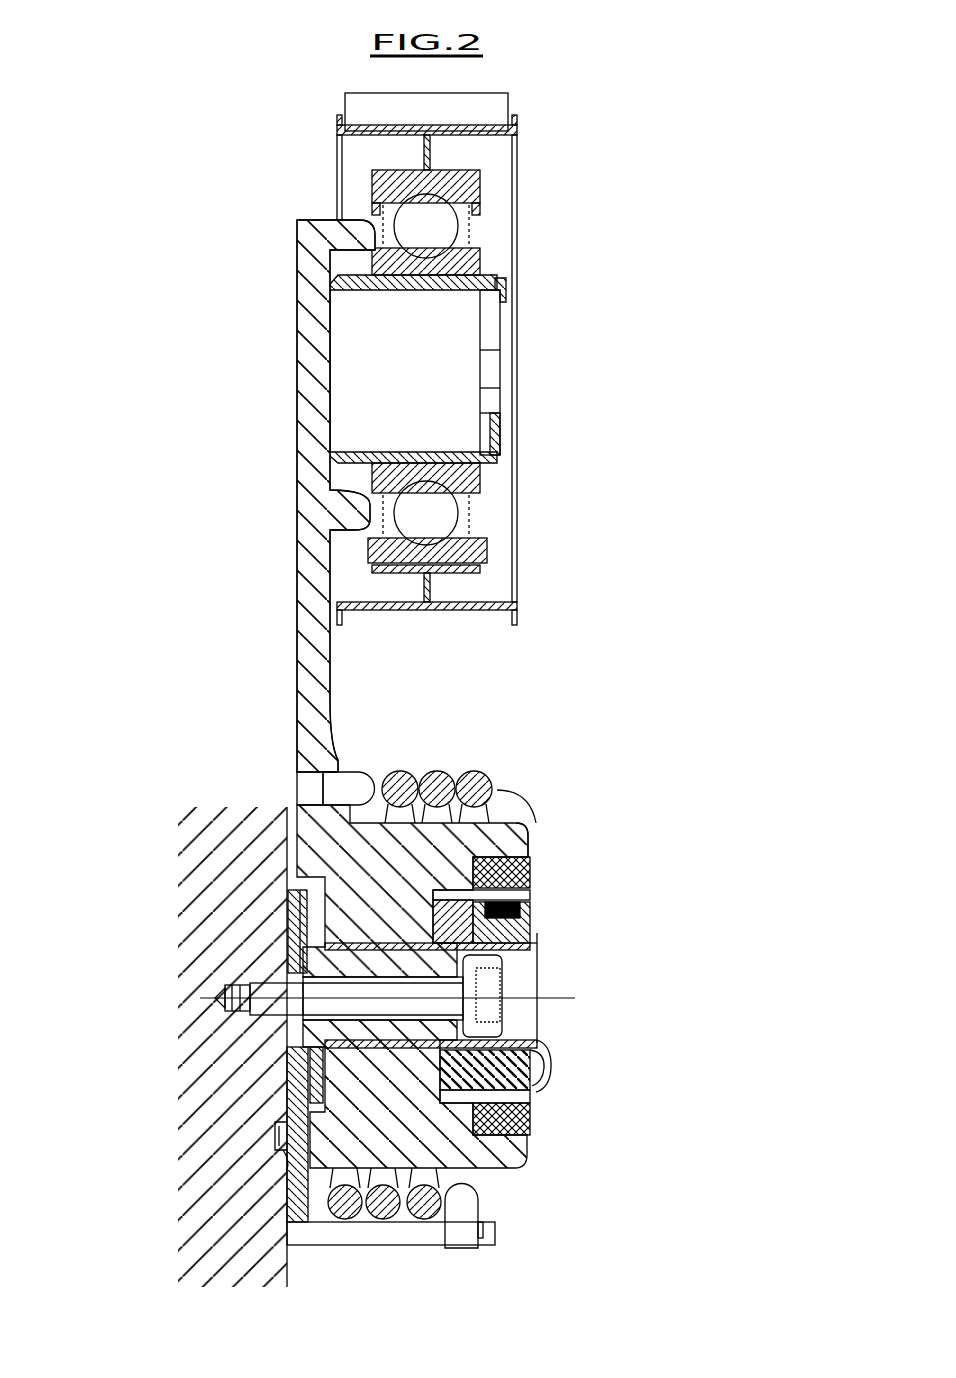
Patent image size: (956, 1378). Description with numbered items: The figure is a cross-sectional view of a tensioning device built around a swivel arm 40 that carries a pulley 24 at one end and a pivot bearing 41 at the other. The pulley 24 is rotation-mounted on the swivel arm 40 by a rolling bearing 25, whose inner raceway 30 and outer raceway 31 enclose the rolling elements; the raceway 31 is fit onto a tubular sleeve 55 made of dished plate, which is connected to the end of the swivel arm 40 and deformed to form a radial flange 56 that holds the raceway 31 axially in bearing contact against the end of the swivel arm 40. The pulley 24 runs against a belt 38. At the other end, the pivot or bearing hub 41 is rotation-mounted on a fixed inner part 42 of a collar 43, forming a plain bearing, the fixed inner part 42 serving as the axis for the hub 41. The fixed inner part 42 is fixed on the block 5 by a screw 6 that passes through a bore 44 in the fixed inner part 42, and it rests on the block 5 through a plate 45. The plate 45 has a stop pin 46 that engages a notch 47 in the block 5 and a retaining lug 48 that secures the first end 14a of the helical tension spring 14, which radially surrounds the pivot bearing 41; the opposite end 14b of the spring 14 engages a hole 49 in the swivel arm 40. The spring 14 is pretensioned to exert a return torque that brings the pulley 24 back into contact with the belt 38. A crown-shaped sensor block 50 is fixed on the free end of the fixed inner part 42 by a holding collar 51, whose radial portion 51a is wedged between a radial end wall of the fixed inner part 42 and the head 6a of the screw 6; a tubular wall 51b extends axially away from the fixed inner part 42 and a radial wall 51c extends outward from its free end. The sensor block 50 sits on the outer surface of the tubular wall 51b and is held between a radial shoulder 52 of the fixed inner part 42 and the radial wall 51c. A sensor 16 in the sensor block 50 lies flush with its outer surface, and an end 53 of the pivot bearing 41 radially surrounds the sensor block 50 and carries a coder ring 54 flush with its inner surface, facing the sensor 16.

The block 5 is at (220, 852).
The screw 6 is at (440, 993).
The head of the screw 6a is at (460, 1002).
The tension spring 14 is at (500, 790).
The first end of the helical spring 14a is at (462, 1232).
The opposite end of the helical spring 14b is at (357, 792).
The sensor 16 is at (510, 897).
The pulley 24 is at (467, 614).
The rolling bearing 25 is at (490, 242).
The inner raceway 30 is at (472, 480).
The outer raceway 31 is at (489, 552).
The belt 38 is at (470, 117).
The swivel arm 40 is at (312, 655).
The pivot bearing 41 is at (530, 826).
The fixed inner part 42 is at (520, 930).
The collar 43 is at (483, 1037).
The bore 44 is at (396, 947).
The plate 45 is at (290, 930).
The stop pin 46 is at (272, 1136).
The notch 47 is at (283, 1150).
The retaining lug 48 is at (368, 1230).
The hole 49 is at (312, 787).
The sensor block 50 is at (540, 1073).
The holding collar 51 is at (550, 1045).
The radial portion 51a is at (490, 960).
The tubular wall 51b is at (505, 952).
The radial wall 51c is at (601, 1130).
The radial shoulder 52 is at (512, 1140).
The end 53 is at (518, 834).
The coder ring 54 is at (500, 872).
The tubular sleeve 55 is at (497, 437).
The radial flange 56 is at (505, 280).